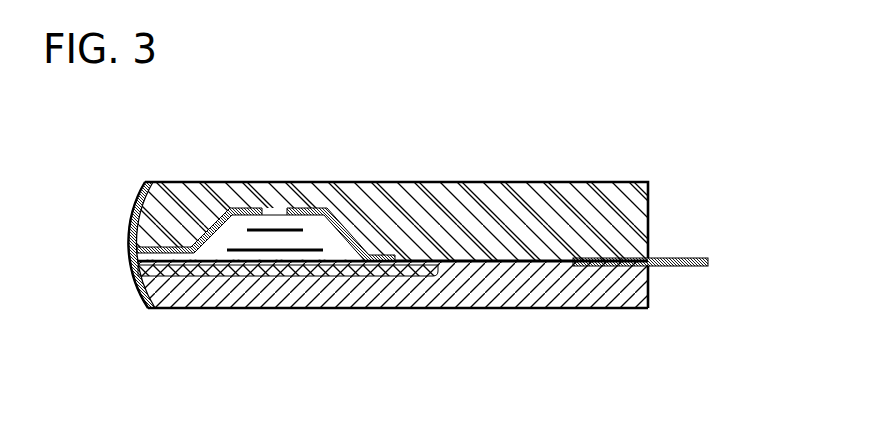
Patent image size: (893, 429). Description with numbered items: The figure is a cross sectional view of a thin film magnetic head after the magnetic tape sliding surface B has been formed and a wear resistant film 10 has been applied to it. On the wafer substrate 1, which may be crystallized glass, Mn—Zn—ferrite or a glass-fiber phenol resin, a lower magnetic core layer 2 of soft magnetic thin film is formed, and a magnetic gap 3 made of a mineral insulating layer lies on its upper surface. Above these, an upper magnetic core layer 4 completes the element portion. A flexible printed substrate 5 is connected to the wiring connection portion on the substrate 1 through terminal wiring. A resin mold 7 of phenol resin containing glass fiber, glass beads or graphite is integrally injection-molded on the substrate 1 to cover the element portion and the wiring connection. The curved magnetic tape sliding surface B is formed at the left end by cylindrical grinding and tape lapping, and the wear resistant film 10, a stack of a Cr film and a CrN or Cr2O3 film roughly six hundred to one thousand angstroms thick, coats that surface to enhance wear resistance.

The wafer substrate 1 is at (648, 285).
The lower magnetic core layer 2 is at (420, 264).
The magnetic gap 3 is at (134, 255).
The upper magnetic core layer 4 is at (350, 230).
The flexible printed substrate 5 is at (673, 258).
The resin mold 7 is at (546, 210).
The wear resistant film 10 is at (135, 203).
The magnetic tape sliding surface B is at (119, 218).